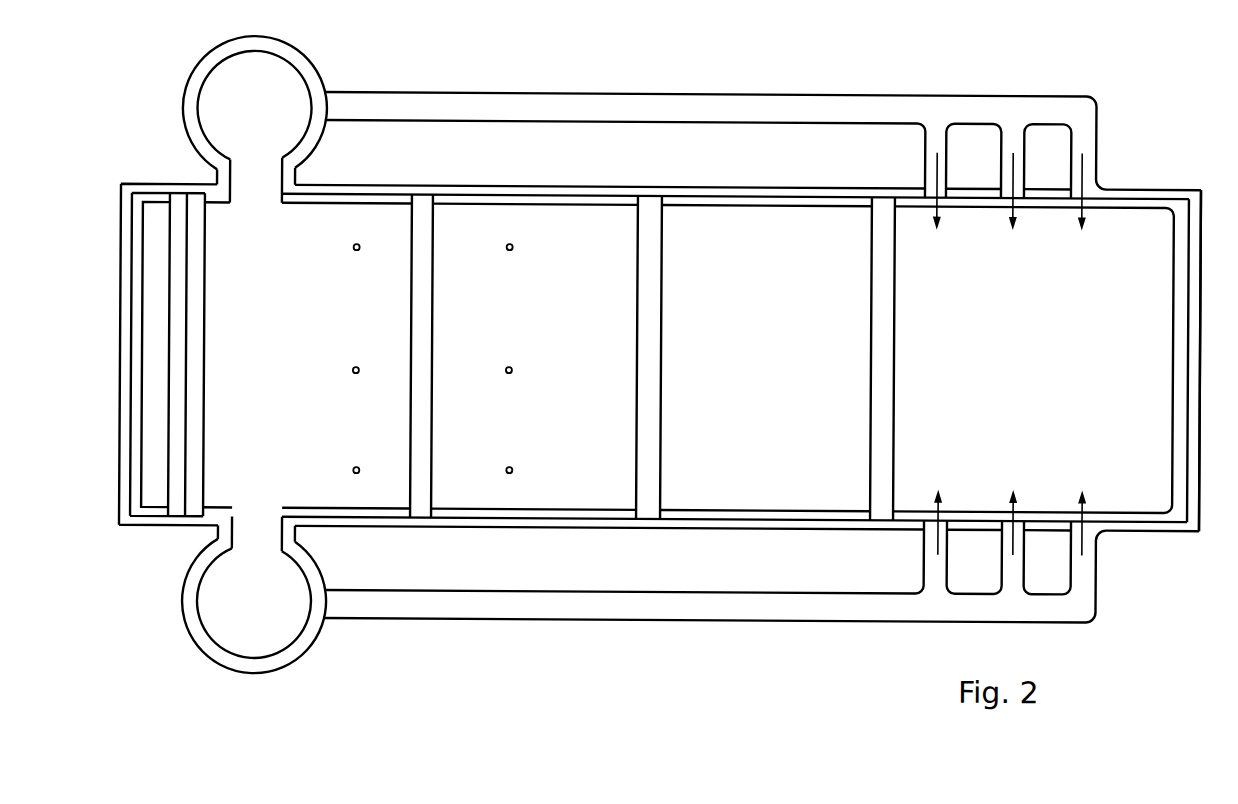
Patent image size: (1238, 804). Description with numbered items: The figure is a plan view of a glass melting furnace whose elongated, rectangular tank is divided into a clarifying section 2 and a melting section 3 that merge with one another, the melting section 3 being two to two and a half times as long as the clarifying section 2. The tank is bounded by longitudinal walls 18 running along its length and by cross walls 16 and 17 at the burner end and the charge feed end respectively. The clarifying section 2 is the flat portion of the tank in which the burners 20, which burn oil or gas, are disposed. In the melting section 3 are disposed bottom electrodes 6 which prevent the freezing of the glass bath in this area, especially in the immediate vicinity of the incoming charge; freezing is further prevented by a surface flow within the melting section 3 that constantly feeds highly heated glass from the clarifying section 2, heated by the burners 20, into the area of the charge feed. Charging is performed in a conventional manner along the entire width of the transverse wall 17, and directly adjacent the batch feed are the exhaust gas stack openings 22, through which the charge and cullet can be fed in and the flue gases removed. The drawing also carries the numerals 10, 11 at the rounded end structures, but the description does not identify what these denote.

The clarifying section 2 is at (1044, 318).
The melting section 3 is at (342, 322).
The bottom electrodes 6 is at (351, 376).
The circular duct 10 is at (271, 75).
The circular duct 11 is at (275, 634).
The cross wall 16 is at (1201, 390).
The cross wall 17 is at (124, 436).
The longitudinal walls 18 is at (705, 193).
The burners 20 is at (1089, 188).
The exhaust gas stack openings 22 is at (263, 514).